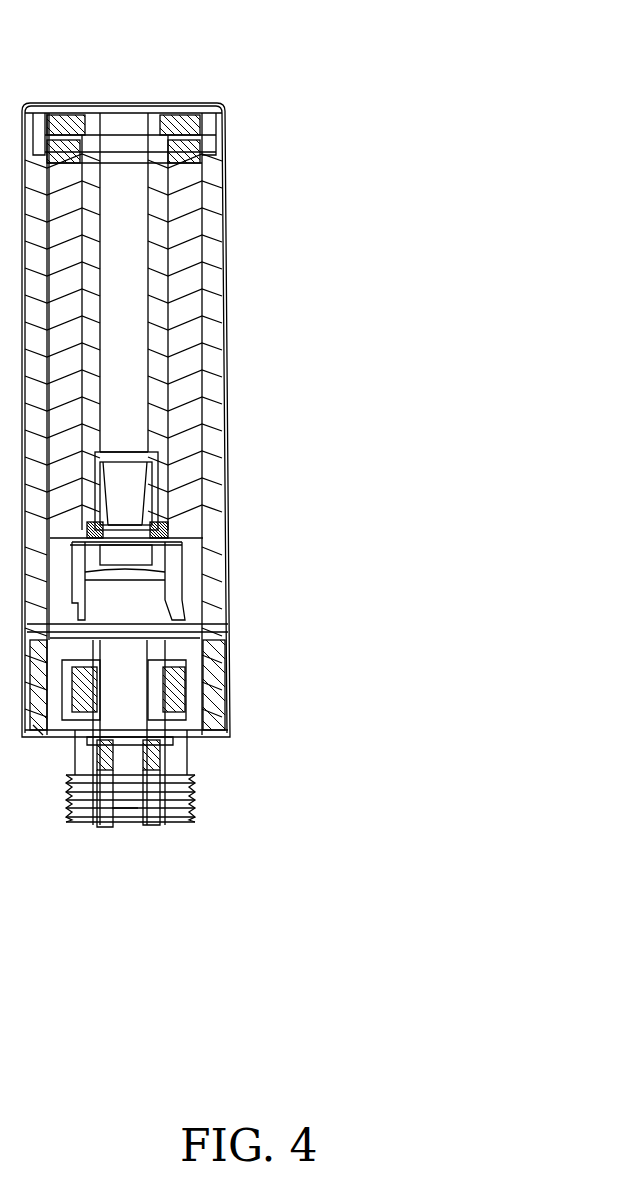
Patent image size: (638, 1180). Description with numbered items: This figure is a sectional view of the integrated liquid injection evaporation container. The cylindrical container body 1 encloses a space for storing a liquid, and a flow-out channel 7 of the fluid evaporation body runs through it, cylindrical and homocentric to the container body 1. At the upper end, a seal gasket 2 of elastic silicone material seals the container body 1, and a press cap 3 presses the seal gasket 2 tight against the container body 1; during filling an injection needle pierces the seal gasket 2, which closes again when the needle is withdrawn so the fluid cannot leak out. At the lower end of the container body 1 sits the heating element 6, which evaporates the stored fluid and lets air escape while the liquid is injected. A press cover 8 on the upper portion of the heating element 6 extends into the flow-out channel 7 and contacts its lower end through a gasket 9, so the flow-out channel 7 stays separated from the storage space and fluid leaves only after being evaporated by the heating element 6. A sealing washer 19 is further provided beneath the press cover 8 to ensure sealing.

The container body 1 is at (223, 427).
The seal gasket 2 is at (200, 153).
The press cap 3 is at (125, 112).
The heating element 6 is at (128, 822).
The flow-out channel 7 is at (125, 275).
The press cover 8 is at (135, 483).
The gasket 9 is at (185, 572).
The washer 19 is at (173, 735).